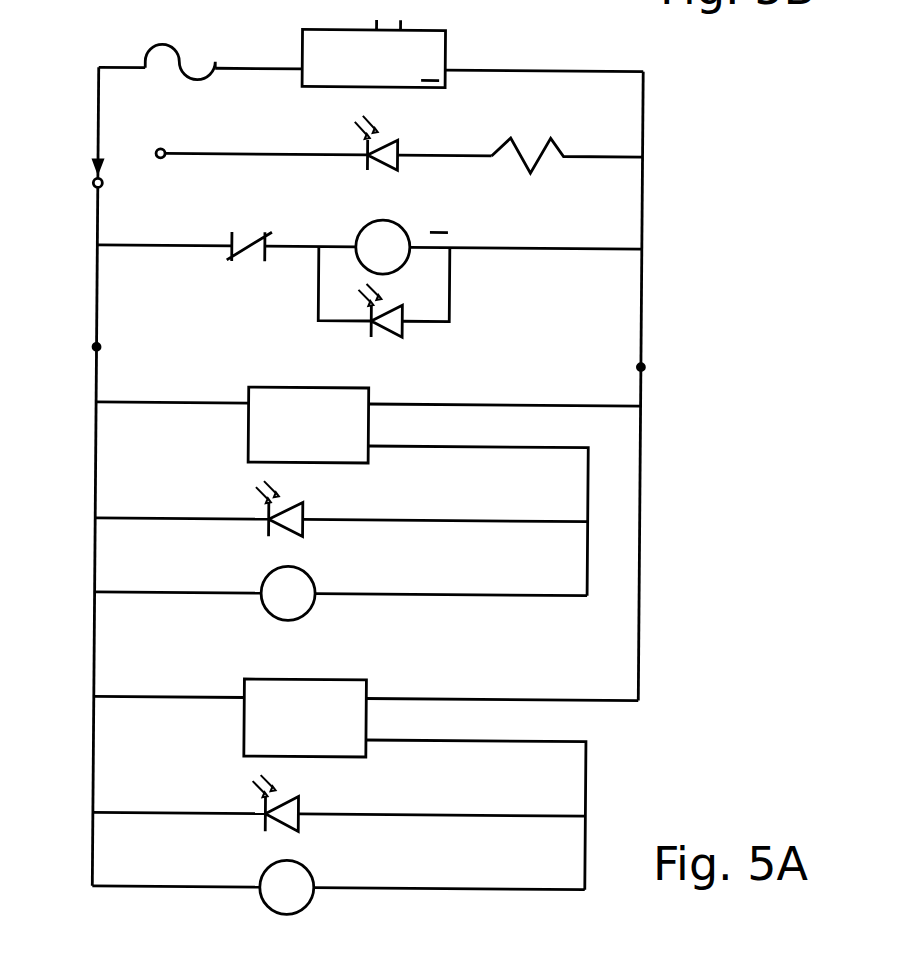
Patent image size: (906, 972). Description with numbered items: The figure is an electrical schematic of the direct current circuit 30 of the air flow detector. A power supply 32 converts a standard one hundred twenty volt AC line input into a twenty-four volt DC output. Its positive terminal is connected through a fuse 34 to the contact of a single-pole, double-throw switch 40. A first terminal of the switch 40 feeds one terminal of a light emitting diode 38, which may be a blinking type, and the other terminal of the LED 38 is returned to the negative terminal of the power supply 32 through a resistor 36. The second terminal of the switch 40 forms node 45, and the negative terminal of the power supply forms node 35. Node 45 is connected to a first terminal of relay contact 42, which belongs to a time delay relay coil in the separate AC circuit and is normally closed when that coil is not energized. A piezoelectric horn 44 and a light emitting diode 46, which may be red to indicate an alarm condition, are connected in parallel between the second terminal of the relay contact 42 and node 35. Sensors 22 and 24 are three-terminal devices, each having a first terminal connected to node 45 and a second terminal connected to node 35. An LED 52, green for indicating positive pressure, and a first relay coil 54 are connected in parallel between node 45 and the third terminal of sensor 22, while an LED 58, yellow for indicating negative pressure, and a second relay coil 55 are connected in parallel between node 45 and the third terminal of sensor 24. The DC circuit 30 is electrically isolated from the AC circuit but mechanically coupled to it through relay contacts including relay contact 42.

The sensor 22 is at (248, 418).
The sensor 24 is at (246, 706).
The circuit 30 is at (693, 217).
The power supply 32 is at (442, 56).
The fuse 34 is at (160, 53).
The node 35 is at (642, 365).
The resistor 36 is at (548, 140).
The light emitting diode 38 is at (396, 150).
The single-pole, double-throw switch 40 is at (93, 150).
The relay contact 42 is at (230, 240).
The piezoelectric horn 44 is at (398, 224).
The node 45 is at (93, 349).
The light emitting diode 46 is at (400, 334).
The LED 52 is at (303, 512).
The first relay coil 54 is at (305, 569).
The second relay coil 55 is at (300, 862).
The LED 58 is at (301, 804).